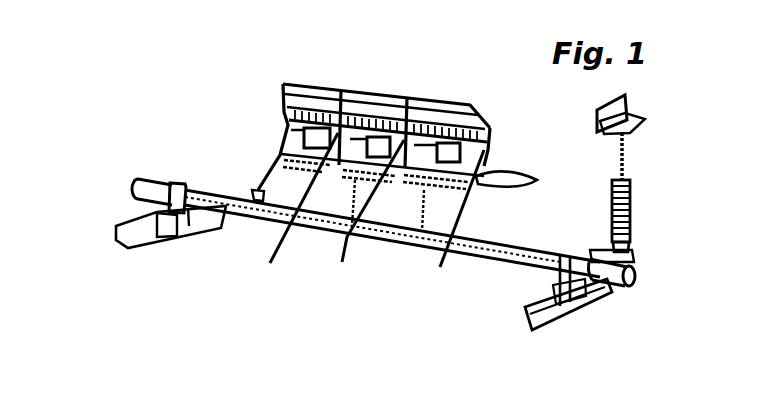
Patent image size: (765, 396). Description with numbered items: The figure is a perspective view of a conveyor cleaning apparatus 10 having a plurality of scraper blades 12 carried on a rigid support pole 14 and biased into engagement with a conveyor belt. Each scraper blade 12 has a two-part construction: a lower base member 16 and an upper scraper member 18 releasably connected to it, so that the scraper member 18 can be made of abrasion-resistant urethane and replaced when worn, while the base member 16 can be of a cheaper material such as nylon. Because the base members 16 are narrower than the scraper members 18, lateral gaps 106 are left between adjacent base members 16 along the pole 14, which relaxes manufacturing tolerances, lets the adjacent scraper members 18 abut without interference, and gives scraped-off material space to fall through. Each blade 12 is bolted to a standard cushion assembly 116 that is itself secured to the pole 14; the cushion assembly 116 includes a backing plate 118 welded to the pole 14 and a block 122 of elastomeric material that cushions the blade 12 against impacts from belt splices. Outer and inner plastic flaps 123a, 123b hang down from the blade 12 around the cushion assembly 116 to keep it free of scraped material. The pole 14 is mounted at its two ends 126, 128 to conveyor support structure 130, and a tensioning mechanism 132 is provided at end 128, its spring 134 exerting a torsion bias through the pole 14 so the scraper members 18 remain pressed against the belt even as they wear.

The conveyor cleaning apparatus 10 is at (140, 62).
The scraper blade 12 is at (252, 79).
The support pole 14 is at (263, 138).
The base member 16 is at (508, 143).
The scraper member 18 is at (381, 81).
The lateral gaps 106 is at (343, 260).
The cushion assembly 116 is at (489, 224).
The backing plate 118 is at (472, 252).
The block 122 is at (440, 267).
The outer plastic flap 123a is at (256, 195).
The inner plastic flap 123b is at (537, 178).
The pole end 126 is at (133, 203).
The pole end 128 is at (613, 287).
The conveyor support structure 130 is at (552, 339).
The tensioning mechanism 132 is at (671, 195).
The spring 134 is at (643, 191).